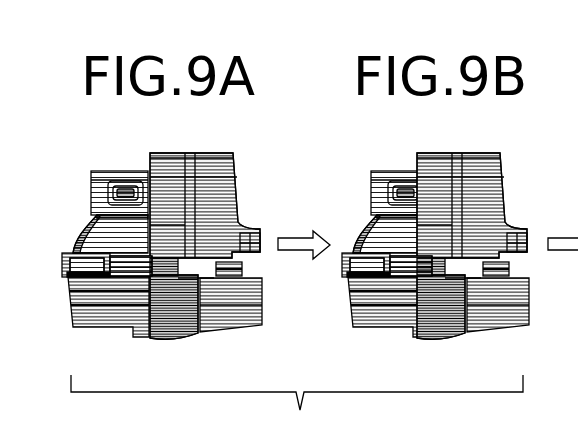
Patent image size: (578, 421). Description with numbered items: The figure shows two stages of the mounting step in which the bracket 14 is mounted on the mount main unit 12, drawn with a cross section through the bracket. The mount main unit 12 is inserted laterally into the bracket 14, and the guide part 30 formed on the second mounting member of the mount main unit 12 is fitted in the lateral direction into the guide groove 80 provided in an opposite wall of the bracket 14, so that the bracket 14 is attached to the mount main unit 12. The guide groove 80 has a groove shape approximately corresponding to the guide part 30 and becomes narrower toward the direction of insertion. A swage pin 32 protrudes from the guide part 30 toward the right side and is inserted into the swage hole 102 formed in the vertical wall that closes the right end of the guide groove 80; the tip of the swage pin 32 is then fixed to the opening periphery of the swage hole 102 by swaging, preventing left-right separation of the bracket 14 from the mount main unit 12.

In FIG. 9A, the mount main unit 12 is at (71, 229).
In FIG. 9B, the mount main unit 12 is at (377, 253).
In FIG. 9A, the bracket 14 is at (244, 178).
In FIG. 9B, the bracket 14 is at (487, 231).
In FIG. 9A, the guide part 30 is at (133, 282).
In FIG. 9B, the guide part 30 is at (398, 308).
In FIG. 9A, the swage pin 32 is at (168, 262).
In FIG. 9B, the swage pin 32 is at (478, 233).
In FIG. 9A, the guide groove 80 is at (184, 264).
In FIG. 9B, the guide groove 80 is at (474, 315).
In FIG. 9A, the swage hole 102 is at (223, 268).
In FIG. 9B, the swage hole 102 is at (530, 271).